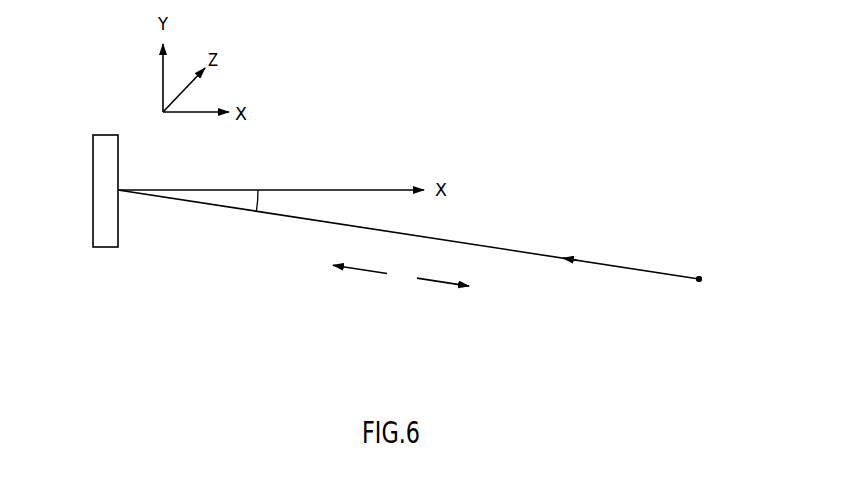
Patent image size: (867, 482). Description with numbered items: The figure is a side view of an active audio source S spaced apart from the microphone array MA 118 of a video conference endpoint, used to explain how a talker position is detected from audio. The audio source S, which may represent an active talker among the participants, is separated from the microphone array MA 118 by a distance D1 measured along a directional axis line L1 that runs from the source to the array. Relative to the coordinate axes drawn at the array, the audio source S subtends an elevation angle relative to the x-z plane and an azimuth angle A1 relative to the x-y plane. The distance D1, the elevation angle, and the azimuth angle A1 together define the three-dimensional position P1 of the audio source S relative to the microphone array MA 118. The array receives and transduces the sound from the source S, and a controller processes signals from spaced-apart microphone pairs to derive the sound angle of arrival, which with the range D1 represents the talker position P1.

The microphone array 118 is at (93, 180).
The microphone array MA is at (77, 170).
The directional axis line L1 is at (482, 246).
The active audio source S is at (707, 282).
The 3-D position P1 is at (719, 302).
The azimuth angle A1 is at (259, 201).
The distance D1 is at (403, 234).